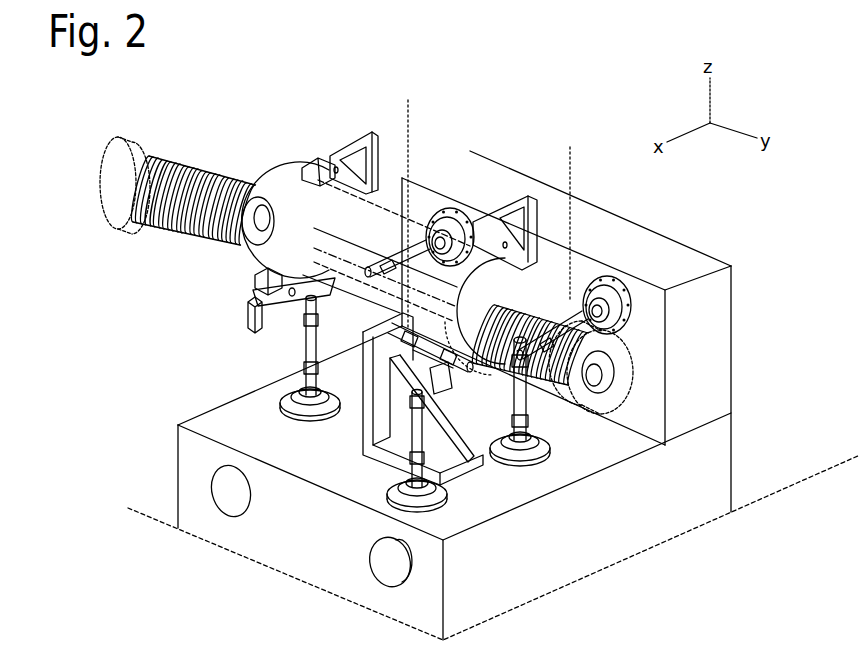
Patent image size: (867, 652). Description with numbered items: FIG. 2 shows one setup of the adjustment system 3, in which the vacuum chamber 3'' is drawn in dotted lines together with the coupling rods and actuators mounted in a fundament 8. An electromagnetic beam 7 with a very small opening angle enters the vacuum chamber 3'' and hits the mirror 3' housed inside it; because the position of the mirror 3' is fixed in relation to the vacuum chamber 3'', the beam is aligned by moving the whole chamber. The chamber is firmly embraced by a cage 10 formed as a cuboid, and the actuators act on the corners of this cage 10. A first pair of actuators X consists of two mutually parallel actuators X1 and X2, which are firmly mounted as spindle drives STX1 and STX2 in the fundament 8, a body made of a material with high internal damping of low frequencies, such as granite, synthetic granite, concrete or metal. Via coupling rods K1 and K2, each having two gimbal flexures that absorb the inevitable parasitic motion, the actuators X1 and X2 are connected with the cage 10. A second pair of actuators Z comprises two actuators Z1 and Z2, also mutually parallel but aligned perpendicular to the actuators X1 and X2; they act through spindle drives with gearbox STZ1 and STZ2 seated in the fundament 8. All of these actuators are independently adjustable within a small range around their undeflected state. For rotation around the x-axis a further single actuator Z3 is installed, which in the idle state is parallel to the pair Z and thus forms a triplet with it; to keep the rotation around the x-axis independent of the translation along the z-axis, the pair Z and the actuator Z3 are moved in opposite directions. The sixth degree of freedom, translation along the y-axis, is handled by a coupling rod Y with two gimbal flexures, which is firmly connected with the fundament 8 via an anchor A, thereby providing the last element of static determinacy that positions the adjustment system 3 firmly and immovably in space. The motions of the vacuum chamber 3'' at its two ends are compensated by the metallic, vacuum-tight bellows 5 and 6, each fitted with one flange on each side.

The adjustment system 3 is at (376, 200).
The mirror 3' is at (386, 274).
The vacuum chamber 3'' is at (285, 212).
The metallic bellows 5 is at (183, 158).
The metallic bellows 6 is at (510, 320).
The electromagnetic beam 7 is at (102, 163).
The fundament 8 is at (684, 248).
The cage 10 is at (363, 132).
The anchor A is at (365, 437).
The coupling rod K1 is at (414, 202).
The coupling rod K2 is at (578, 212).
The spindle drive STX1 is at (440, 207).
The spindle drive STX2 is at (632, 313).
The spindle drive with gearbox STZ1 is at (548, 446).
The spindle drive with gearbox STZ2 is at (283, 422).
The first pair of actuators X is at (600, 283).
The actuator X1 is at (449, 207).
The actuator X2 is at (610, 280).
The coupling rod Y is at (363, 362).
The second pair of actuators Z is at (447, 506).
The actuator Z1 is at (515, 467).
The actuator Z2 is at (413, 513).
The actuator Z3 is at (282, 410).